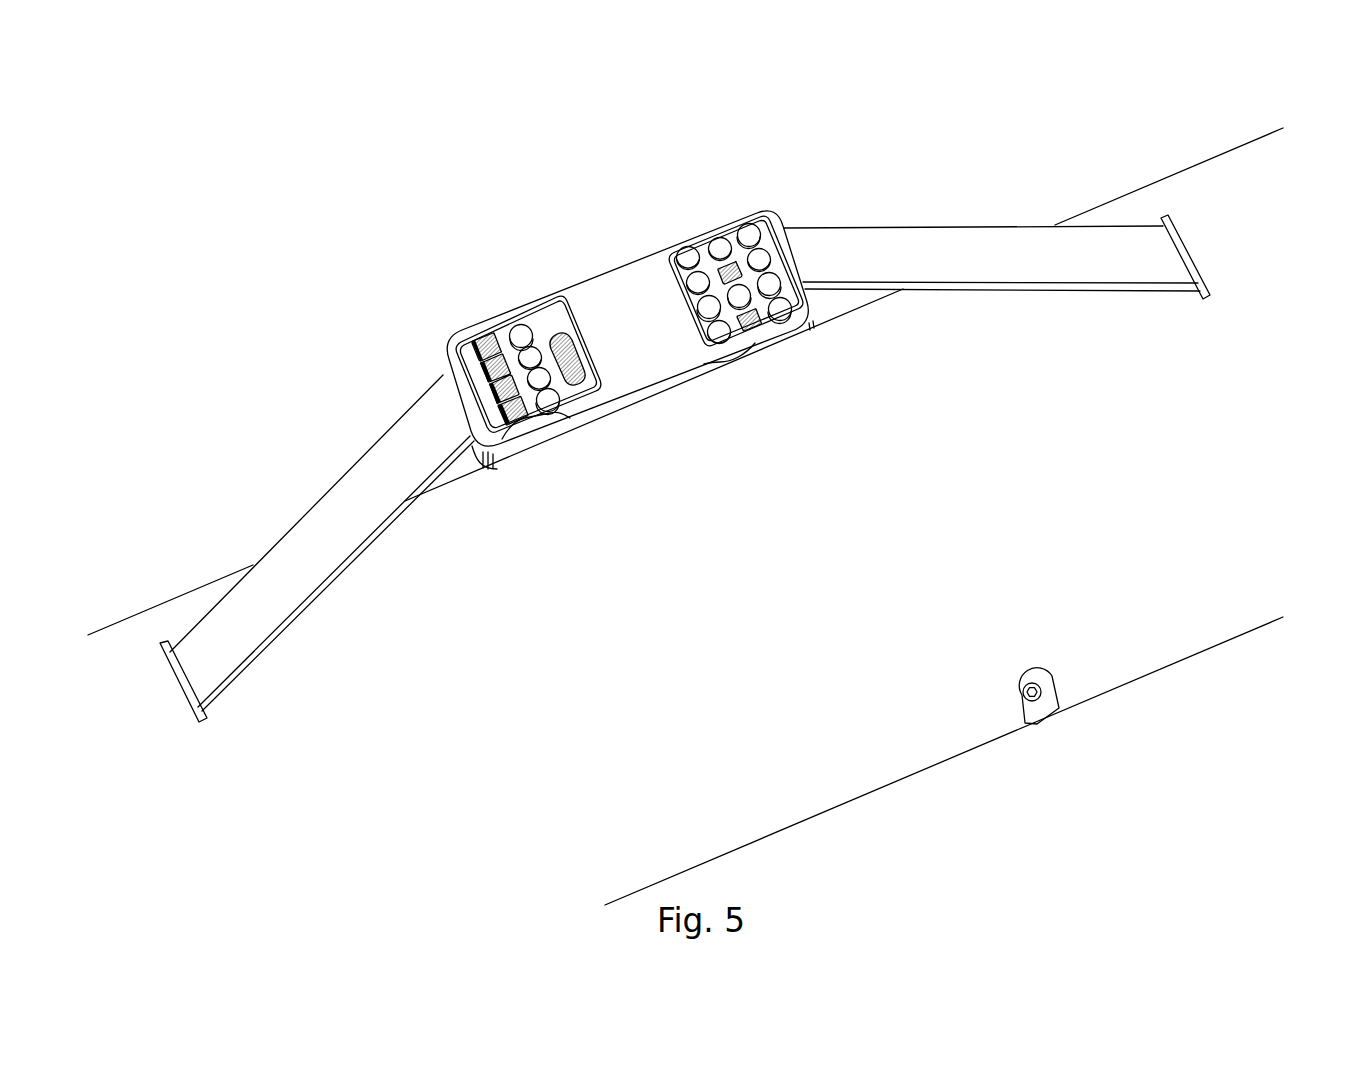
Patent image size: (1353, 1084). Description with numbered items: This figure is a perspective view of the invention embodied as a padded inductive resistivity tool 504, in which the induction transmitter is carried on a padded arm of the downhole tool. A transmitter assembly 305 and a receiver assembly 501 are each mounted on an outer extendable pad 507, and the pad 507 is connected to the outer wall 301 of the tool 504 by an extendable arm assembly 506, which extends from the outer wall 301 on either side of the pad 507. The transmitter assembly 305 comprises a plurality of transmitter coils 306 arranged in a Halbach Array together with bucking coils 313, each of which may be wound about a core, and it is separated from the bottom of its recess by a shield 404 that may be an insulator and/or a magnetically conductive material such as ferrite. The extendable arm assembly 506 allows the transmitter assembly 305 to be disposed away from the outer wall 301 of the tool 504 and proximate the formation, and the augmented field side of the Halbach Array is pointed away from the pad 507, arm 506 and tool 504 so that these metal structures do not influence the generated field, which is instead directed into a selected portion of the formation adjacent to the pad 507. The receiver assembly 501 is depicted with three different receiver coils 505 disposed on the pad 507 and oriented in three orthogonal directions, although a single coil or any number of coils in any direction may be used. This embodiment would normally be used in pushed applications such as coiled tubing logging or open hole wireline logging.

The outer wall 301 is at (1197, 163).
The transmitter assembly 305 is at (773, 352).
The transmitter coils 306 is at (719, 238).
The bucking coils 313 is at (686, 250).
The shield 404 is at (666, 255).
The receiver assembly 501 is at (434, 370).
The padded inductive resistivity tool 504 is at (288, 158).
The receiver coils 505 is at (562, 332).
The extendable arm assembly 506 is at (1080, 273).
The outer extendable pad 507 is at (652, 370).